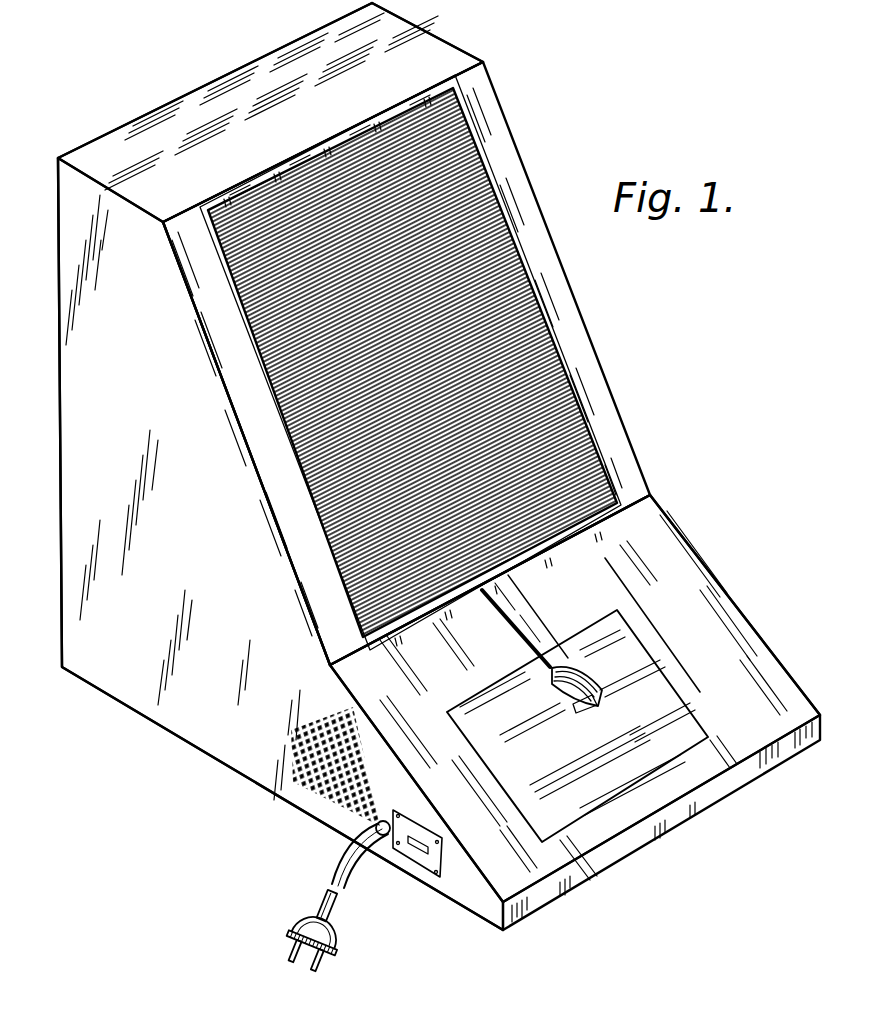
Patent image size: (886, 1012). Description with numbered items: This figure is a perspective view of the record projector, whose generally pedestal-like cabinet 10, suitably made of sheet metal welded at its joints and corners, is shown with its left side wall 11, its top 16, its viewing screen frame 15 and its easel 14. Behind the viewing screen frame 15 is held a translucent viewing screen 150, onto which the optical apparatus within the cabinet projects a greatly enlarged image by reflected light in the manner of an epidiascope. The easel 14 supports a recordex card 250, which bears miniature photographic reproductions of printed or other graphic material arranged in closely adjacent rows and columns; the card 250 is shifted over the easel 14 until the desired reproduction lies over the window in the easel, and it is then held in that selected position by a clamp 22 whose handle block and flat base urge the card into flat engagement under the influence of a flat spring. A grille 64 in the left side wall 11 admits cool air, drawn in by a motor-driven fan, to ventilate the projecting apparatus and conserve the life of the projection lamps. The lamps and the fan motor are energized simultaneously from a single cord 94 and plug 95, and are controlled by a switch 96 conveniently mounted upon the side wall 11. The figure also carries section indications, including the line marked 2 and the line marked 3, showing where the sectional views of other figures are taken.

The cabinet 10 is at (127, 706).
The left side wall 11 is at (234, 645).
The top 16 is at (292, 78).
The viewing screen frame 15 is at (545, 245).
The viewing screen 150 is at (473, 193).
The easel 14 is at (650, 568).
The recordex card 250 is at (552, 774).
The slot 3 is at (503, 602).
The clamp 22 is at (548, 652).
The grille 64 is at (294, 772).
The cord 94 is at (352, 882).
The plug 95 is at (302, 926).
The switch 96 is at (428, 862).
The section line 2 is at (383, 43).